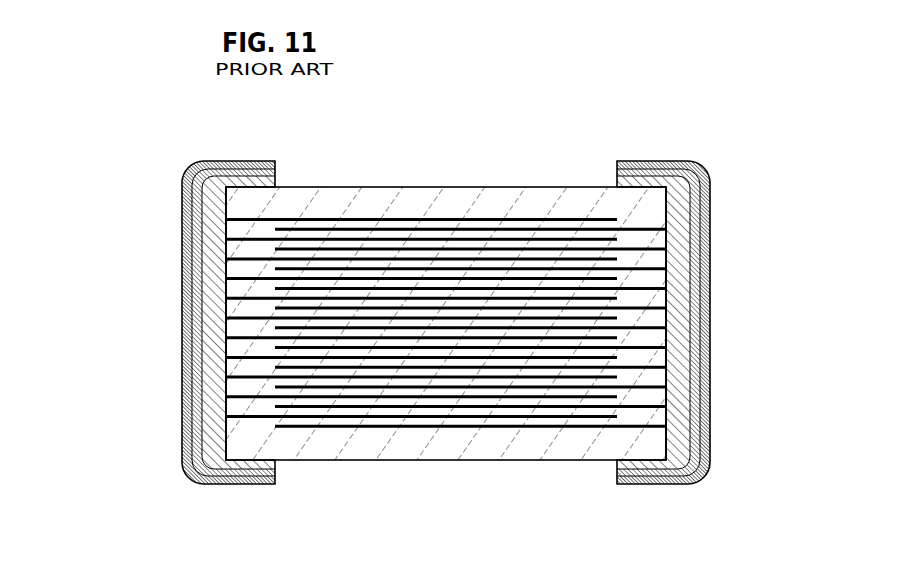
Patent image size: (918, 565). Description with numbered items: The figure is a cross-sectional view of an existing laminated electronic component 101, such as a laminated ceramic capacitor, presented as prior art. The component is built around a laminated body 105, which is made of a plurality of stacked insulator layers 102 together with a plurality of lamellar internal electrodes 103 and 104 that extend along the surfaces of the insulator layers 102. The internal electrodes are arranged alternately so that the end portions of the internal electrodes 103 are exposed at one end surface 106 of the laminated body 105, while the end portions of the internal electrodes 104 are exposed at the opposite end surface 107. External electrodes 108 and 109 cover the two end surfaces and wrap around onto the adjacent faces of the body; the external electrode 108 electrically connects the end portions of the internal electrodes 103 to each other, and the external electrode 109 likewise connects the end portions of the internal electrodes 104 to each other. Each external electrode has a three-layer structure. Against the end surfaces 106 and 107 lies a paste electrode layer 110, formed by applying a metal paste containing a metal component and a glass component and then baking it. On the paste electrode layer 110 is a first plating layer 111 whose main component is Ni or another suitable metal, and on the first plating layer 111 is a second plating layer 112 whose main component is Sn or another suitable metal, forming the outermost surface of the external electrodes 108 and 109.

The laminated electronic component 101 is at (250, 98).
The insulator layers 102 is at (371, 409).
The internal electrodes 103 is at (367, 239).
The internal electrodes 104 is at (457, 249).
The laminated body 105 is at (545, 187).
The end surface 106 is at (227, 309).
The end surface 107 is at (667, 299).
The external electrode 108 is at (102, 210).
The external electrode 109 is at (800, 172).
The paste electrode layer 110 is at (207, 225).
The first plating layer 111 is at (197, 251).
The second plating layer 112 is at (185, 280).